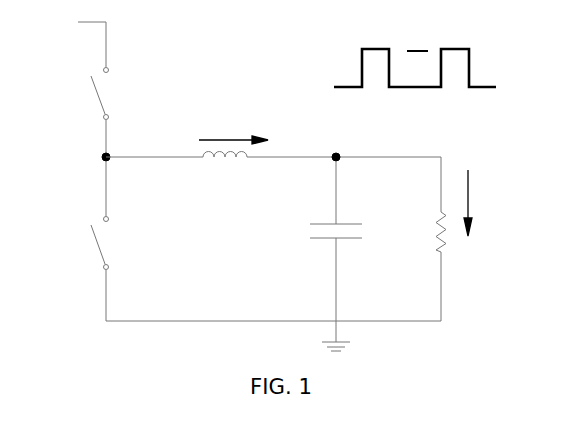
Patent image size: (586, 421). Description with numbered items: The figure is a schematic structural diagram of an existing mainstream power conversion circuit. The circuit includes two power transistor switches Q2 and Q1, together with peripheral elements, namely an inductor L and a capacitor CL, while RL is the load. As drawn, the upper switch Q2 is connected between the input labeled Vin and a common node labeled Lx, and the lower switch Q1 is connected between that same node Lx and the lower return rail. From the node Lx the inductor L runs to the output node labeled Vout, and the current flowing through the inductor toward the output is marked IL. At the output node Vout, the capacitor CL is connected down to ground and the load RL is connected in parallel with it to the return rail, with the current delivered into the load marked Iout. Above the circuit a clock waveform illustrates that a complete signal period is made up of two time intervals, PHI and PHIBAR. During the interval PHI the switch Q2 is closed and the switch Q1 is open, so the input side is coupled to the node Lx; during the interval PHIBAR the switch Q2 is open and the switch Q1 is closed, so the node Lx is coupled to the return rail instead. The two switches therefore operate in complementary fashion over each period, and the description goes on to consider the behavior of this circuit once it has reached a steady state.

The input voltage Vin is at (70, 38).
The power transistor switch Q2 is at (122, 113).
The power transistor switch Q1 is at (266, 241).
The switching node Lx is at (152, 145).
The inductor L is at (322, 171).
The inductor current IL is at (233, 126).
The output voltage node Vout is at (340, 176).
The capacitor CL is at (313, 283).
The load RL is at (423, 239).
The output current Iout is at (487, 203).
The time interval PHI is at (415, 53).
The time interval PHIBAR is at (417, 65).